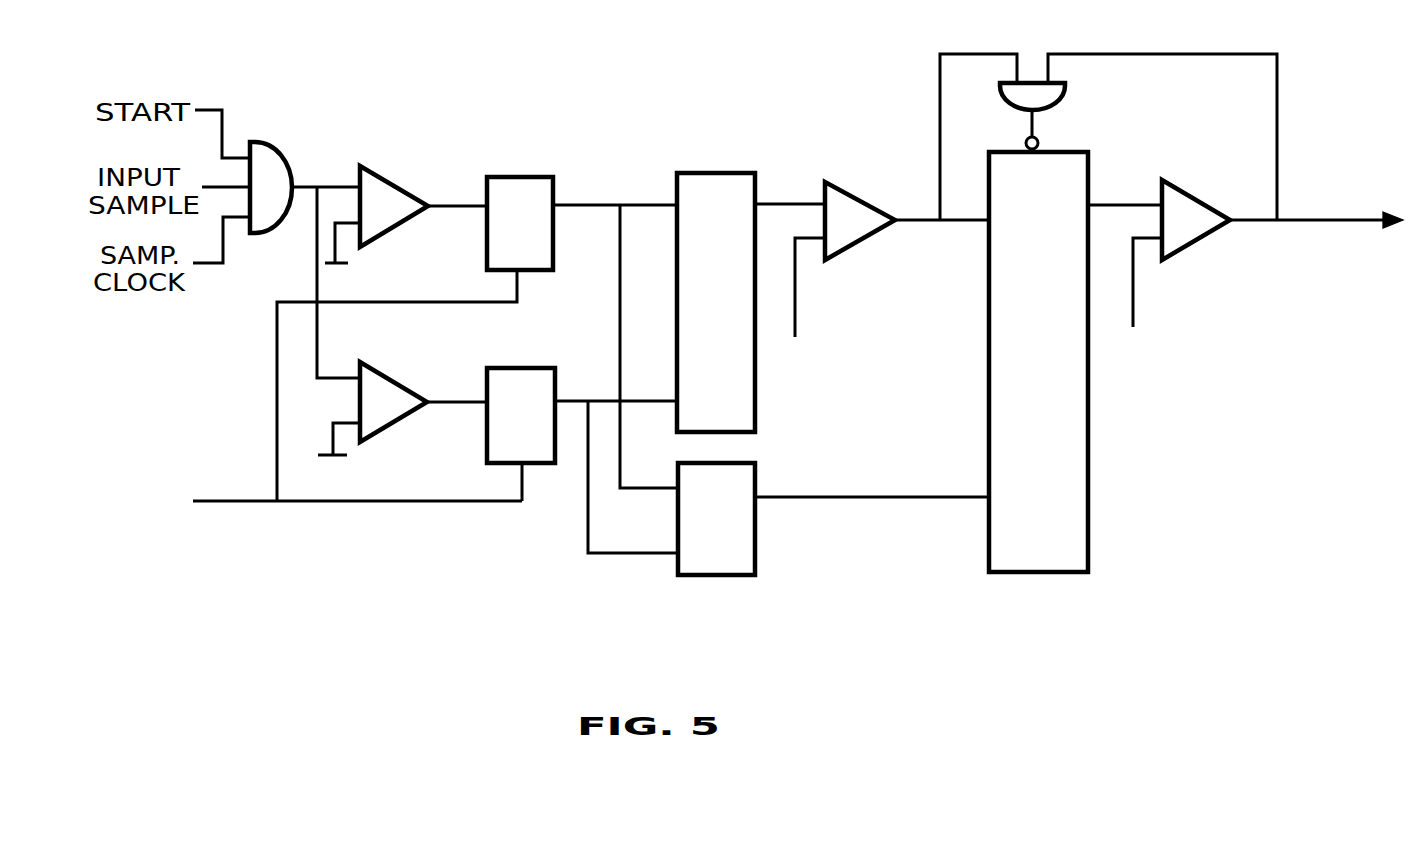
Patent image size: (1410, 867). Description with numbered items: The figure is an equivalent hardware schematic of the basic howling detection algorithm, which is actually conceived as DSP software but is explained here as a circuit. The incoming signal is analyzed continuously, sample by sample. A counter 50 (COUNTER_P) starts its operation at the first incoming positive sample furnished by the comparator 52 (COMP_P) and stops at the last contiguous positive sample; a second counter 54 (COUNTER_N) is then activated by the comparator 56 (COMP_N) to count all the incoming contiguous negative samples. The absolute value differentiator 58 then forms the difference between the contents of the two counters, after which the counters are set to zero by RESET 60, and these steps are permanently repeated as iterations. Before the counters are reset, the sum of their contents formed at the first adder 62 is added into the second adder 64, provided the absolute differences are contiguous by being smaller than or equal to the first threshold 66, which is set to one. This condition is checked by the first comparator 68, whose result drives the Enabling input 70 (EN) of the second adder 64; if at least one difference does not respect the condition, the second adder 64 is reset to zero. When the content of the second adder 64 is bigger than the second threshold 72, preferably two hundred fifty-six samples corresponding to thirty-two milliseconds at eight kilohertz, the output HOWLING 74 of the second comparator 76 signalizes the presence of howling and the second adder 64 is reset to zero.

The counter COUNTER_P 50 is at (538, 188).
The comparator COMP_P 52 is at (393, 197).
The second counter COUNTER_N 54 is at (543, 385).
The comparator COMP_N 56 is at (392, 388).
The absolute value differentiator 58 is at (755, 405).
The RESET 60 is at (247, 507).
The first adder ADDER_1 62 is at (755, 530).
The second adder ADDER_2 64 is at (1090, 522).
The threshold THRESHOLD_1 66 is at (796, 318).
The comparator COMP_1 68 is at (862, 227).
The Enabling input EN 70 is at (987, 225).
The second threshold THRESHOLD_2 72 is at (1134, 310).
The output HOWLING 74 is at (1362, 213).
The comparator COMP_2 76 is at (1193, 208).